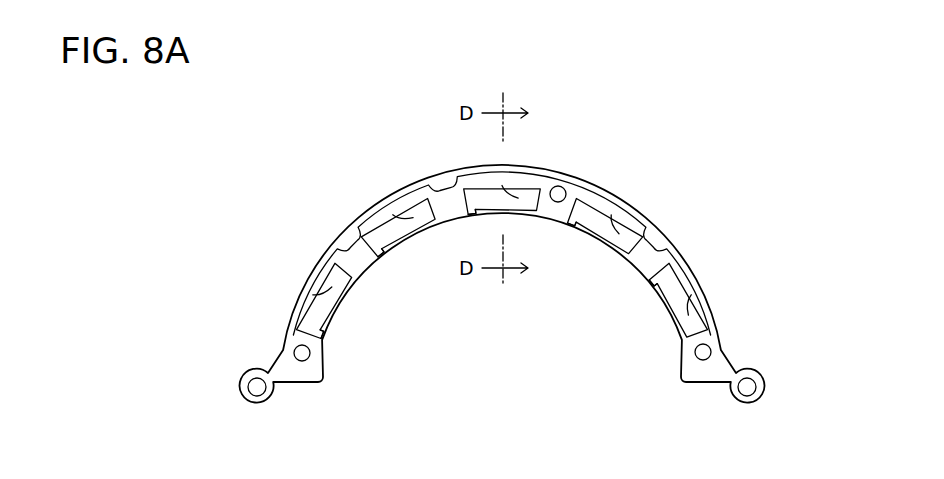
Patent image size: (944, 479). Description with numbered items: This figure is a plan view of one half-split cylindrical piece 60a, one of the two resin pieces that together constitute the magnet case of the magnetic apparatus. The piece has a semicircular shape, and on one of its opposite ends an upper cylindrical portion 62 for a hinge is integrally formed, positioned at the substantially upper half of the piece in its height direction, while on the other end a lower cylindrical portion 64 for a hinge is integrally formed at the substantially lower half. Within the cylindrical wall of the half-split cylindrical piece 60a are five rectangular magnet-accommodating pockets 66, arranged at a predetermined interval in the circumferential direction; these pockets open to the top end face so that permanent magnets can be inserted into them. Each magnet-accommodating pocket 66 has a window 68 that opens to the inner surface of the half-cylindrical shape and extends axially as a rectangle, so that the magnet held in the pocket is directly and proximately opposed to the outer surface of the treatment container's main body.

The half-split cylindrical piece 60a is at (633, 191).
The upper cylindrical portion for a hinge 62 is at (763, 375).
The lower cylindrical portion for a hinge 64 is at (248, 372).
The magnet-accommodating pocket 66 is at (416, 213).
The window 68 is at (337, 320).